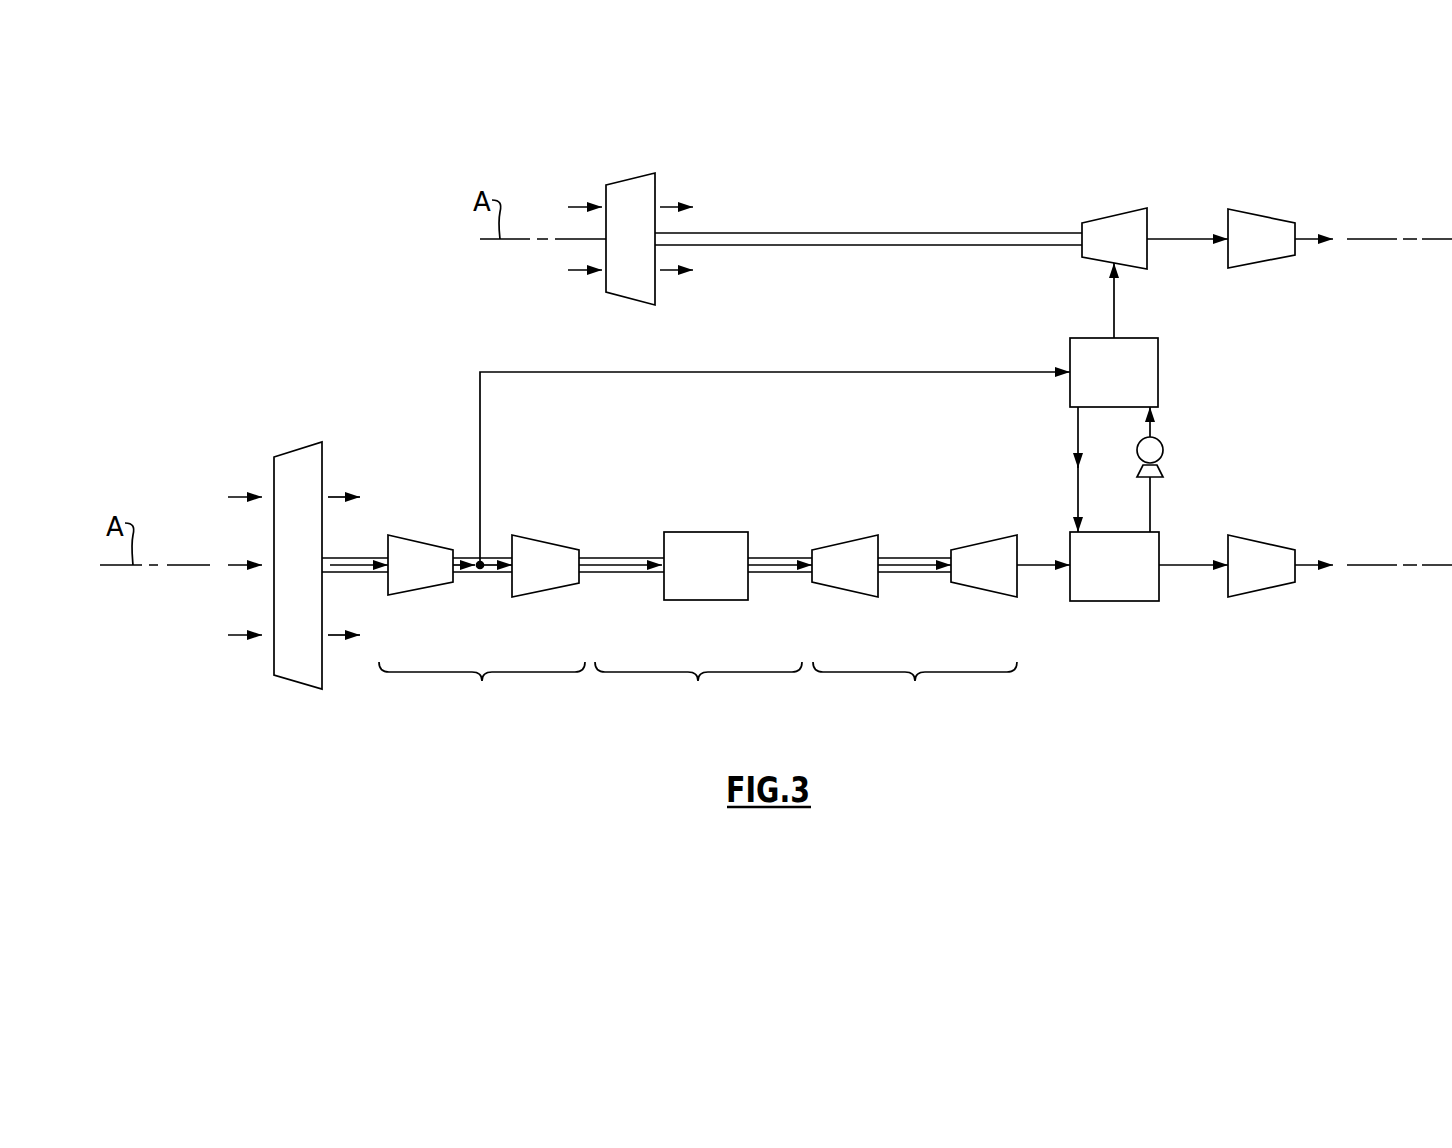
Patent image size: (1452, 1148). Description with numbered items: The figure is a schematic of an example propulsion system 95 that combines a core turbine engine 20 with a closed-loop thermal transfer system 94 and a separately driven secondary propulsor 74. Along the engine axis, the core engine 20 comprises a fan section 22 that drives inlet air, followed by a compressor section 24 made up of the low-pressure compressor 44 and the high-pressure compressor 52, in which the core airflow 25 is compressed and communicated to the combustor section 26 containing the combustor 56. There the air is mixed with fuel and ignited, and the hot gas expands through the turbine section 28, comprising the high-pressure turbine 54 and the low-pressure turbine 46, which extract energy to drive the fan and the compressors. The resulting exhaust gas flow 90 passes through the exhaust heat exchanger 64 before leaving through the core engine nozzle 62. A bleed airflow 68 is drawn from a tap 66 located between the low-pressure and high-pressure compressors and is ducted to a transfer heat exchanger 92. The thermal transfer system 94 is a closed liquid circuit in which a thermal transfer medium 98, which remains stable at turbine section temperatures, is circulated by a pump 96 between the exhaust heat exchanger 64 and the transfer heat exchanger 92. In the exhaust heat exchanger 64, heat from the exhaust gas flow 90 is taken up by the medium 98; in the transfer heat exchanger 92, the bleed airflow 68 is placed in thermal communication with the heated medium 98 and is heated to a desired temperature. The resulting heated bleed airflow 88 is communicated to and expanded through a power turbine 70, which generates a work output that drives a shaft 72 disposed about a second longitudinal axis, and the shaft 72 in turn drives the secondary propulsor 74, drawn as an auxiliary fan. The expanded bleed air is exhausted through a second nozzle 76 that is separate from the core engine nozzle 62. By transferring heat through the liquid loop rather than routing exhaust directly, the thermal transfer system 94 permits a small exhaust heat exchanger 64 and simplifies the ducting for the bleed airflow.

The core turbine engine 20 is at (448, 785).
The fan section 22 is at (301, 672).
The compressor section 24 is at (482, 688).
The core airflow 25 is at (464, 578).
The combustor section 26 is at (698, 688).
The turbine section 28 is at (915, 687).
The low-pressure compressor section 44 is at (437, 535).
The low-pressure turbine section 46 is at (992, 590).
The high-pressure compressor section 52 is at (562, 535).
The high-pressure turbine section 54 is at (852, 590).
The combustor 56 is at (695, 532).
The core engine nozzle 62 is at (1261, 589).
The exhaust heat exchanger 64 is at (1160, 543).
The tap 66 is at (483, 578).
The bleed airflow 68 is at (480, 437).
The power turbine 70 is at (1117, 211).
The shaft 72 is at (908, 236).
The secondary propulsor 74 is at (655, 183).
The second nozzle 76 is at (1262, 262).
The heated bleed airflow 88 is at (1116, 311).
The exhaust gas flow 90 is at (1040, 570).
The transfer heat exchanger 92 is at (1158, 366).
The thermal transfer system 94 is at (1190, 451).
The propulsion system 95 is at (452, 343).
The pump 96 is at (1158, 443).
The thermal transfer medium 98 is at (1074, 463).